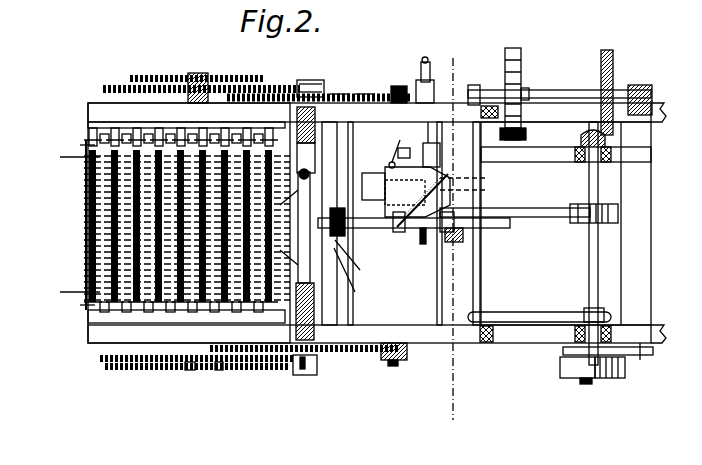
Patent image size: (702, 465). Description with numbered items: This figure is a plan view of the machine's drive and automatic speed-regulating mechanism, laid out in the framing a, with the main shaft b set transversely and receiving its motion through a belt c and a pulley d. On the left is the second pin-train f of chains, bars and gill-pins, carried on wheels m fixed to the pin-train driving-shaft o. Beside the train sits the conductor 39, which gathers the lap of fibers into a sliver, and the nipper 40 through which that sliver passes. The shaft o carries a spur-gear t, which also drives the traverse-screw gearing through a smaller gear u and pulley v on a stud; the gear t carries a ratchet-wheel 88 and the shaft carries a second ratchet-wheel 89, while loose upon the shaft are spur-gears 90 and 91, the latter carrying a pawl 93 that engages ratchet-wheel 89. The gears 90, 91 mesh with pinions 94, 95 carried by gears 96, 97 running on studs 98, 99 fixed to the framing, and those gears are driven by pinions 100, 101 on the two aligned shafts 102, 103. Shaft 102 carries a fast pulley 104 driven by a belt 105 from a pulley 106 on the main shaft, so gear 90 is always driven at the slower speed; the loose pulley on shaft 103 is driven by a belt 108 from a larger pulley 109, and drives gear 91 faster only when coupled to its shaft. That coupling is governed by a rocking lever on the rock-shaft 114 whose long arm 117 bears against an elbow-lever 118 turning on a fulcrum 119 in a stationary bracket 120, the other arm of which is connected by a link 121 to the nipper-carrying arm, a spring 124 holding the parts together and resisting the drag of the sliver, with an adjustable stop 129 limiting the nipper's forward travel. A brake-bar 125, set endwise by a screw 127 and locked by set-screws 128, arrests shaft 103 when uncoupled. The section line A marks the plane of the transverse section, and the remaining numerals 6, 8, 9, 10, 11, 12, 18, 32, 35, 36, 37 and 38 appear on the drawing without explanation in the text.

The gear 6 is at (195, 73).
The bearing bracket 8 is at (578, 140).
The gear wheel 9 is at (601, 70).
The shaft 10 is at (565, 90).
The collar 11 is at (535, 80).
The gear wheel 12 is at (520, 48).
The bearing 18 is at (490, 106).
The frame part 32 is at (639, 9).
The frame part 35 is at (679, 6).
The pin 36 is at (653, 363).
The plate 37 is at (563, 351).
The frame part 38 is at (563, 7).
The conductor 39 is at (298, 175).
The nipper 40 is at (356, 276).
The ratchet-wheel 88 is at (145, 370).
The ratchet-wheel 89 is at (155, 68).
The spur-gear 90 is at (100, 358).
The spur-gear 91 is at (105, 87).
The pawl 93 is at (237, 92).
The pinion 94 is at (302, 375).
The pinion 95 is at (330, 92).
The gear 96 is at (305, 366).
The gear 97 is at (360, 90).
The stud 98 is at (304, 375).
The stud 99 is at (316, 70).
The pinion 100 is at (400, 360).
The pinion 101 is at (412, 80).
The shaft 102 is at (392, 366).
The shaft 103 is at (386, 142).
The pulley 104 is at (433, 267).
The driving-belt 105 is at (522, 305).
The pulley 106 is at (578, 305).
The driving-belt 108 is at (555, 223).
The pulley 109 is at (580, 204).
The rock-shaft 114 is at (487, 178).
The arm 117 is at (448, 165).
The elbow-lever 118 is at (406, 192).
The fulcrum 119 is at (378, 151).
The bracket 120 is at (389, 165).
The link 121 is at (340, 235).
The spring 124 is at (424, 245).
The brake-bar 125 is at (438, 144).
The screw 127 is at (425, 57).
The set-screws 128 is at (420, 82).
The stop 129 is at (364, 262).
The section line A is at (451, 238).
The framing a is at (351, 221).
The main shaft b is at (600, 243).
The belt c is at (560, 366).
The pulley d is at (605, 378).
The pin-train f is at (179, 222).
The wheel m is at (67, 226).
The shaft o is at (192, 370).
The spur-gear t is at (220, 370).
The gear u is at (127, 10).
The pulley v is at (170, 8).